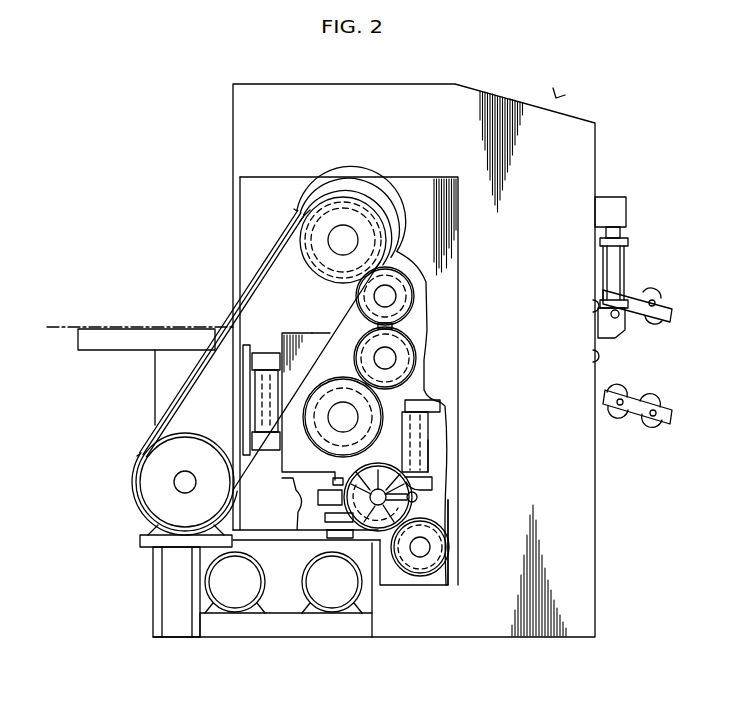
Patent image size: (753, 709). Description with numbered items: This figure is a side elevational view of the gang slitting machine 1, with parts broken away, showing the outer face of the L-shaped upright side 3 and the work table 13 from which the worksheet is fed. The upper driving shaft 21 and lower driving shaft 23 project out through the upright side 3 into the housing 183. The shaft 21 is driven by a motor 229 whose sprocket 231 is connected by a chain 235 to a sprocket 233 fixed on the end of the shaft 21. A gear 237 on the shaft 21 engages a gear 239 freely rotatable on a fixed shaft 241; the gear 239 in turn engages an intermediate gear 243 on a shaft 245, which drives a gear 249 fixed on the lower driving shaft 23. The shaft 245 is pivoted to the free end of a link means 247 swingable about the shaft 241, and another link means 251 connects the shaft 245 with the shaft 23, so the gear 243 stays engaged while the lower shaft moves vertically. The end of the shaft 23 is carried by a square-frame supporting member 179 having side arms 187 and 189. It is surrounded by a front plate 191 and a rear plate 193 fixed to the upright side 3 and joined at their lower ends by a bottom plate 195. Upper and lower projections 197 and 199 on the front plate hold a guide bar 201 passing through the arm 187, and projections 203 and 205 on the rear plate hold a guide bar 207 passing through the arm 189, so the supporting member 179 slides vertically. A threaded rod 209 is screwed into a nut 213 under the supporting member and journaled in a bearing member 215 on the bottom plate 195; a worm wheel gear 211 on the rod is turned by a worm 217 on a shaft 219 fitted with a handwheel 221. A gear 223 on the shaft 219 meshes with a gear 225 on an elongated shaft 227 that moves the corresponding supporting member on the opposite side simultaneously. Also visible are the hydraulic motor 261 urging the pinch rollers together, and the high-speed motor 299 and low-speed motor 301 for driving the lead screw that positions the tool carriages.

The gang slitting machine 1 is at (556, 98).
The upright side 3 is at (348, 86).
The work table 13 is at (82, 342).
The upper driving shaft 21 is at (342, 226).
The lower driving shaft 23 is at (343, 410).
The supporting member 179 is at (300, 350).
The housing 183 is at (403, 185).
The arm 187 is at (262, 403).
The arm 189 is at (420, 432).
The front plate 191 is at (244, 358).
The rear plate 193 is at (428, 447).
The bottom plate 195 is at (332, 582).
The upper projection 197 is at (268, 352).
The lower projection 199 is at (262, 445).
The guide bar 201 is at (262, 378).
The upper projection 203 is at (420, 404).
The lower projection 205 is at (405, 489).
The guide bar 207 is at (422, 416).
The threaded rod 209 is at (304, 502).
The gear 211 is at (326, 500).
The nut 213 is at (331, 482).
The bearing member 215 is at (338, 523).
The worm 217 is at (372, 538).
The shaft 219 is at (392, 503).
The handwheel 221 is at (417, 497).
The gear 223 is at (418, 561).
The gear 225 is at (438, 545).
The shaft 227 is at (432, 553).
The motor 229 is at (135, 471).
The sprocket 231 is at (158, 425).
The sprocket 233 is at (295, 257).
The chain 235 is at (265, 270).
The gear 237 is at (377, 182).
The gear 239 is at (392, 291).
The shaft 241 is at (394, 299).
The gear 243 is at (392, 352).
The shaft 245 is at (395, 362).
The link means 247 is at (410, 318).
The gear 249 is at (308, 406).
The link means 251 is at (410, 386).
The hydraulic motor 261 is at (620, 270).
The high-speed motor 299 is at (240, 610).
The low-speed motor 301 is at (332, 612).